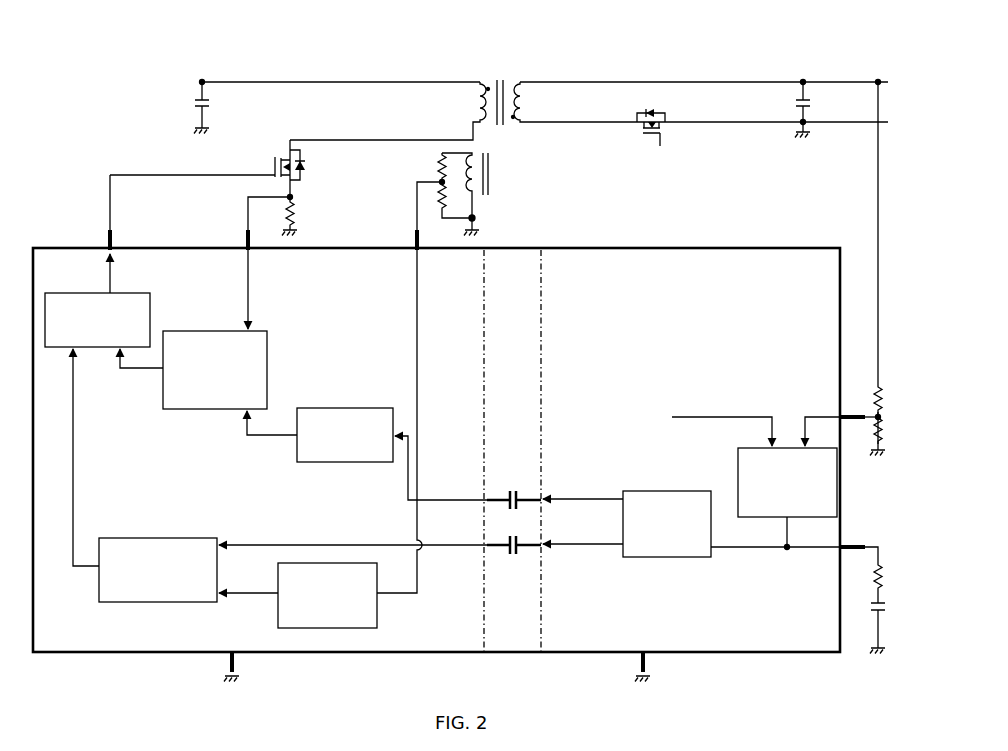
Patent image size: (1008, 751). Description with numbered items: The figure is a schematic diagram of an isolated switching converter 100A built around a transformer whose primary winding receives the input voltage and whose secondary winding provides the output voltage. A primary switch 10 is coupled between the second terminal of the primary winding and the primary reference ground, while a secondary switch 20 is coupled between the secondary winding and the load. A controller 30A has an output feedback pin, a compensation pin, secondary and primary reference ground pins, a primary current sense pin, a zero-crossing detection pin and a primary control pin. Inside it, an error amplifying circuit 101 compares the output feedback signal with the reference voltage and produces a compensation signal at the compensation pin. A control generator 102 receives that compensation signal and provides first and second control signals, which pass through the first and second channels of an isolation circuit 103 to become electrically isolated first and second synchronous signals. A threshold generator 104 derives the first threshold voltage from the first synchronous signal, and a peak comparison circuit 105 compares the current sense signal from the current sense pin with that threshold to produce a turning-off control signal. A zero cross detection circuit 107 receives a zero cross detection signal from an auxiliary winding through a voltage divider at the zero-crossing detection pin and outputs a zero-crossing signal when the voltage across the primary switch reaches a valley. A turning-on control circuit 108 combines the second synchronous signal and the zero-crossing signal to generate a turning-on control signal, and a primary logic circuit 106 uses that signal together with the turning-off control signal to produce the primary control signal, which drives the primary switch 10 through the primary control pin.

The isolated switching converter 100A is at (598, 38).
The primary switch 10 is at (274, 159).
The secondary switch 20 is at (647, 135).
The controller 30A is at (636, 247).
The error amplifying circuit 101 is at (737, 456).
The control generator 102 is at (637, 561).
The isolation circuit 103 is at (483, 588).
The threshold generator 104 is at (318, 464).
The peak comparison circuit 105 is at (176, 412).
The primary logic circuit 106 is at (68, 349).
The zero cross detection circuit 107 is at (289, 629).
The turning-on control circuit 108 is at (118, 604).